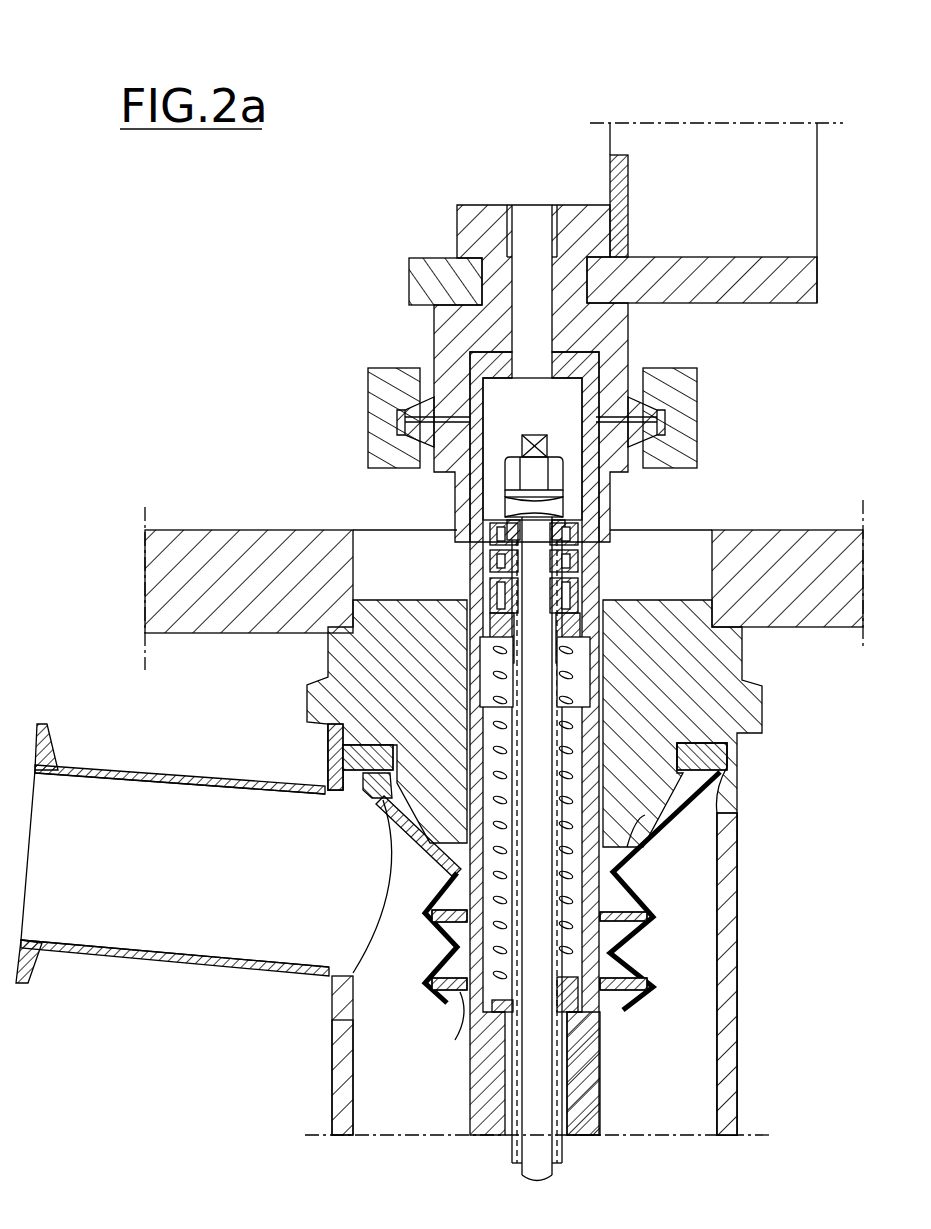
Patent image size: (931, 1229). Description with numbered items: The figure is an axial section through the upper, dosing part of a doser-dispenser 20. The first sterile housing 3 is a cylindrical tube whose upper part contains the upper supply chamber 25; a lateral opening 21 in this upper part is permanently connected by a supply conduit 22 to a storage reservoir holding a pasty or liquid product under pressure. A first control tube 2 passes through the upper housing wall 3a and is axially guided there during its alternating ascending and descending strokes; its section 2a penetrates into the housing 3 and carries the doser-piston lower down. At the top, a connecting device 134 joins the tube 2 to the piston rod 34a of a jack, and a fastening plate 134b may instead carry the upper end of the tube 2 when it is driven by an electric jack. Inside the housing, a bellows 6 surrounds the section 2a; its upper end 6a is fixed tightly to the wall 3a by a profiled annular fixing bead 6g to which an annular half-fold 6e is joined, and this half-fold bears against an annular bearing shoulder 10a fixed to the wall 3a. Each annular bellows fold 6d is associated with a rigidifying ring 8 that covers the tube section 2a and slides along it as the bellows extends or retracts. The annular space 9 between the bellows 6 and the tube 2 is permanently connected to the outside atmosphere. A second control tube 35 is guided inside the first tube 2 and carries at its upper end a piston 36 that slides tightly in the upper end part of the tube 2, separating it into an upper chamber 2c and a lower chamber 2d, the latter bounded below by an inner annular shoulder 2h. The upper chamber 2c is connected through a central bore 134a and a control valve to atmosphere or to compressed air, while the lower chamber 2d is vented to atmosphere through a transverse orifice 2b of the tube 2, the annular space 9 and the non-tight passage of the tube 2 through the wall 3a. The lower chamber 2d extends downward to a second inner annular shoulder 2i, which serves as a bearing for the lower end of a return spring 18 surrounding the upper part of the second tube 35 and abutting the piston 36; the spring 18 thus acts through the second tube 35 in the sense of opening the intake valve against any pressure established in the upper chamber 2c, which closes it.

The connecting device 134 is at (455, 327).
The central bore 134a is at (523, 218).
The fastening plate 134b is at (407, 285).
The piston rod 34a is at (716, 183).
The first control tube 2 is at (482, 363).
The section of tube 2a is at (583, 1076).
The transverse orifice 2b is at (465, 907).
The upper chamber 2c is at (528, 418).
The lower chamber 2d is at (573, 677).
The inner annular shoulder 2h is at (565, 700).
The second inner annular shoulder 2i is at (493, 987).
The piston 36 is at (497, 548).
The sterile housing 3 is at (332, 1114).
The housing wall 3a is at (326, 661).
The bellows 6 is at (447, 1003).
The upper end of the bellows 6a is at (383, 817).
The annular bellows fold 6d is at (623, 1012).
The annular half-fold 6e is at (475, 882).
The profiled annular fixing bead 6g is at (343, 758).
The rigidifying ring 8 is at (462, 1003).
The annular space 9 is at (613, 905).
The annular bearing shoulder 10a is at (712, 797).
The return spring 18 is at (603, 747).
The doser-dispenser 20 is at (322, 1035).
The lateral opening 21 is at (350, 863).
The supply conduit 22 is at (147, 766).
The upper supply chamber 25 is at (682, 1107).
The second control tube 35 is at (505, 1075).